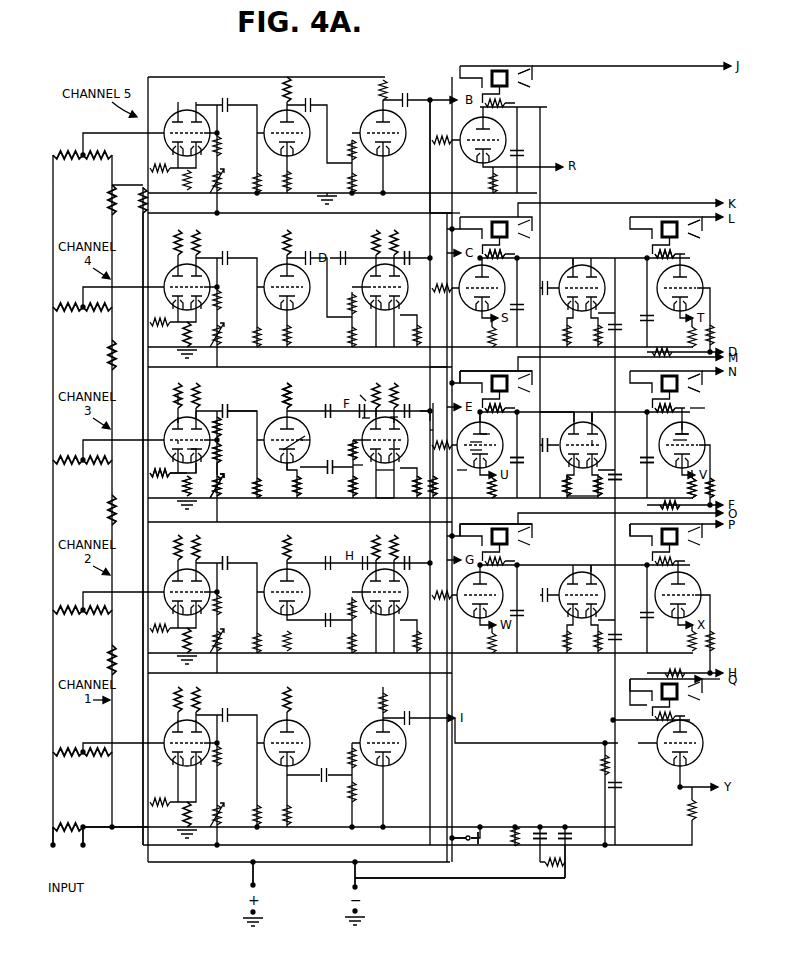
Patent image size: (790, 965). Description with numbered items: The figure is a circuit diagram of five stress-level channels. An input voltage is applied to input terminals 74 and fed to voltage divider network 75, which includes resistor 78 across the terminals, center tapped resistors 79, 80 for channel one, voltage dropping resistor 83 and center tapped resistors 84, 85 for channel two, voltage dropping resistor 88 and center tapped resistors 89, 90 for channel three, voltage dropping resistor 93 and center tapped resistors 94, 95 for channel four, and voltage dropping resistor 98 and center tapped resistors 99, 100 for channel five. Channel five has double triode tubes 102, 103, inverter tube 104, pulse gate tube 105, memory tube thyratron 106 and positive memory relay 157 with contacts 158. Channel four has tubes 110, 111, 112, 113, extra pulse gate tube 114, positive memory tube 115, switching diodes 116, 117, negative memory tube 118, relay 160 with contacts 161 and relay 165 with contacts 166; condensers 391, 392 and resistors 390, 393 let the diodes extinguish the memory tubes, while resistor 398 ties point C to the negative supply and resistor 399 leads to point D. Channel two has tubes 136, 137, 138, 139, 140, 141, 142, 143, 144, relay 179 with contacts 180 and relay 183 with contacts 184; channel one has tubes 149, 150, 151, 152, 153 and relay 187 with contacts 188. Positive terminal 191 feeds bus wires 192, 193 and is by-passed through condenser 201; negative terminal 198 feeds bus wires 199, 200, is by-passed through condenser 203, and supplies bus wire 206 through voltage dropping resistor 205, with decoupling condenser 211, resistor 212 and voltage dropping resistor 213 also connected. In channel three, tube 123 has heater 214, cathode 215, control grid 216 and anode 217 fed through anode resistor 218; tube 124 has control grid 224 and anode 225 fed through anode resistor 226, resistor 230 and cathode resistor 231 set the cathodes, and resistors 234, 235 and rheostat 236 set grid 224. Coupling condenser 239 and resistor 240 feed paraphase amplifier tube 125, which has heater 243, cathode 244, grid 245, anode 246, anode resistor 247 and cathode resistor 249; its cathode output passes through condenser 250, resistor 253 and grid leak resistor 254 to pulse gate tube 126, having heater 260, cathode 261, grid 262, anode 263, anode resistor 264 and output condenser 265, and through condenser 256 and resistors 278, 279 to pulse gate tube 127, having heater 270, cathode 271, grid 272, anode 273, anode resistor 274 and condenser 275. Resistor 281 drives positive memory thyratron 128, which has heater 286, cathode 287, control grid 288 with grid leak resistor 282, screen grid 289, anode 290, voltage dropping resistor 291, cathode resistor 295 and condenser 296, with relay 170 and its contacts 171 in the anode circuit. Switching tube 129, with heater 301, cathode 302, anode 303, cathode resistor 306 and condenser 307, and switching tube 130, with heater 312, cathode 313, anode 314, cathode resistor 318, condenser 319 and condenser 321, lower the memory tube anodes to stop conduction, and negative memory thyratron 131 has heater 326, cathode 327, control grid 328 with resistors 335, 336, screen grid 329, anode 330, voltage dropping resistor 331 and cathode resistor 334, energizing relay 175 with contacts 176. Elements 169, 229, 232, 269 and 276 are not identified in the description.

The supply lead 192 is at (151, 77).
The supply lead 193 is at (452, 77).
The relay 157 is at (496, 64).
The relay contacts 158 is at (533, 78).
The dual triode tube 102 is at (172, 120).
The coupling capacitor and resistor 103 is at (213, 108).
The amplifier tube 104 is at (272, 110).
The amplifier tube 105 is at (370, 116).
The trigger tube 106 is at (471, 128).
The input resistor 99 is at (70, 158).
The input resistor 100 is at (98, 158).
The resistor 98 is at (110, 201).
The resistor 213 is at (141, 211).
The relay lead 160 is at (500, 218).
The relay 161 is at (522, 230).
The relay 166 is at (654, 232).
The relay contacts 165 is at (685, 224).
The supply lead 206 is at (435, 220).
The resistor 390 is at (486, 254).
The trigger tube 115 is at (466, 277).
The plate lead 116 is at (570, 269).
The dual triode tube 117 is at (594, 278).
The trigger tube 118 is at (688, 275).
The resistor 393 is at (685, 257).
The dual triode tube 110 is at (172, 271).
The plate resistors 111 is at (195, 265).
The amplifier tube 112 is at (275, 266).
The dual triode tube 113 is at (368, 281).
The coupling capacitor 114 is at (409, 257).
The capacitor 391 is at (546, 298).
The capacitor 392 is at (616, 326).
The resistor 399 is at (661, 350).
The input resistor 94 is at (70, 310).
The input resistor 95 is at (98, 310).
The resistor 93 is at (109, 354).
The plate resistor 123 is at (180, 386).
The plate resistor 124 is at (196, 385).
The plate resistor 125 is at (287, 388).
The plate resistor 126 is at (376, 384).
The plate resistor 127 is at (394, 385).
The lead 398 is at (430, 366).
The relay lead 169 is at (464, 371).
The relay lead 170 is at (508, 369).
The relay 171 is at (518, 388).
The plate lead 129 is at (574, 412).
The plate lead 130 is at (592, 412).
The relay 176 is at (654, 386).
The relay contacts 175 is at (690, 385).
The plate lead 128 is at (478, 410).
The trigger tube 289 is at (474, 432).
The plate 290 is at (494, 424).
The grid 288 is at (485, 436).
The cathode 287 is at (483, 451).
The resistor 291 is at (508, 407).
The capacitor 307 is at (538, 442).
The capacitor 296 is at (520, 465).
The grid lead 286 is at (459, 472).
The ground lead 199 is at (445, 483).
The cathode resistor 295 is at (502, 488).
The plate lead 303 is at (557, 406).
The dual triode tube 302 is at (583, 445).
The triode section 313 is at (593, 439).
The plate lead 314 is at (596, 419).
The cathode resistor 301 is at (577, 482).
The cathode resistor 312 is at (587, 486).
The cathode lead 318 is at (582, 493).
The cathode lead 306 is at (564, 477).
The capacitor 321 is at (642, 458).
The capacitor 319 is at (616, 474).
The resistor 331 is at (646, 407).
The plate lead 330 is at (699, 402).
The plate 329 is at (686, 425).
The grid 131 is at (691, 431).
The grid 328 is at (692, 441).
The trigger tube 327 is at (700, 448).
The cathode resistor 326 is at (678, 473).
The cathode lead 334 is at (688, 480).
The resistor 335 is at (708, 486).
The resistor 336 is at (714, 487).
The plate lead 218 is at (174, 400).
The plate 217 is at (173, 417).
The dual triode tube 216 is at (171, 426).
The triode section 224 is at (187, 436).
The plate lead 226 is at (200, 402).
The coupling capacitor 225 is at (216, 409).
The resistor 234 is at (223, 427).
The resistor 229 is at (223, 446).
The resistor 235 is at (223, 463).
The variable resistor 236 is at (225, 486).
The lead 239 is at (242, 408).
The amplifier tube 246 is at (276, 419).
The plate resistor 247 is at (291, 396).
The coupling capacitor 256 is at (328, 408).
The grid lead 245 is at (310, 433).
The grid 244 is at (318, 437).
The cathode lead 243 is at (285, 470).
The grid resistor 240 is at (260, 488).
The cathode resistor 249 is at (300, 481).
The capacitor 250 is at (334, 466).
The resistor 254 is at (351, 484).
The resistor 253 is at (352, 440).
The lead 261 is at (361, 471).
The dual triode tube 262 is at (385, 440).
The cathode 260 is at (383, 476).
The cathode 270 is at (383, 490).
The lead 263 is at (361, 417).
The lead 264 is at (359, 393).
The capacitor 265 is at (361, 407).
The plate lead 269 is at (383, 404).
The grid 271 is at (397, 443).
The grid 272 is at (407, 425).
The plate 273 is at (405, 417).
The coupling capacitor 274 is at (408, 404).
The lead 275 is at (432, 403).
The lead 276 is at (443, 412).
The lead 278 is at (444, 401).
The lead 281 is at (440, 426).
The cathode resistor 279 is at (414, 500).
The cathode resistor 282 is at (434, 502).
The triode section 215 is at (183, 448).
The cathode resistor 214 is at (160, 468).
The cathode lead 230 is at (170, 475).
The cathode resistor 231 is at (190, 486).
The cathode lead 232 is at (206, 472).
The input resistor 89 is at (70, 464).
The input resistor 90 is at (98, 464).
The resistor 88 is at (109, 503).
The dual triode tube 136 is at (172, 575).
The coupling capacitor 137 is at (200, 572).
The amplifier tube 138 is at (276, 563).
The dual triode tube 139 is at (366, 583).
The coupling capacitor 140 is at (404, 573).
The input resistor 84 is at (70, 612).
The input resistor 85 is at (98, 612).
The resistor 83 is at (107, 660).
The relay lead 179 is at (490, 524).
The relay 180 is at (524, 542).
The dual triode tube 142 is at (574, 571).
The plate lead 143 is at (591, 566).
The relay lead 184 is at (642, 534).
The relay 183 is at (688, 536).
The trigger tube 141 is at (462, 585).
The trigger tube 144 is at (688, 581).
The relay leads 188 is at (650, 702).
The relay 187 is at (688, 691).
The trigger tube 153 is at (692, 736).
The dual triode tube 149 is at (172, 720).
The plate resistor 150 is at (198, 723).
The amplifier tube 151 is at (274, 717).
The amplifier tube 152 is at (370, 722).
The switch 201 is at (465, 829).
The resistor 212 is at (516, 825).
The capacitor 211 is at (541, 827).
The capacitor 203 is at (567, 827).
The resistor 205 is at (540, 863).
The supply lead 200 is at (435, 878).
The negative supply terminal 198 is at (359, 887).
The positive supply terminal 191 is at (255, 887).
The input resistor 79 is at (66, 760).
The input resistor 80 is at (95, 760).
The input resistor 78 is at (70, 824).
The input terminals 74 is at (55, 848).
The input lead 75 is at (100, 840).